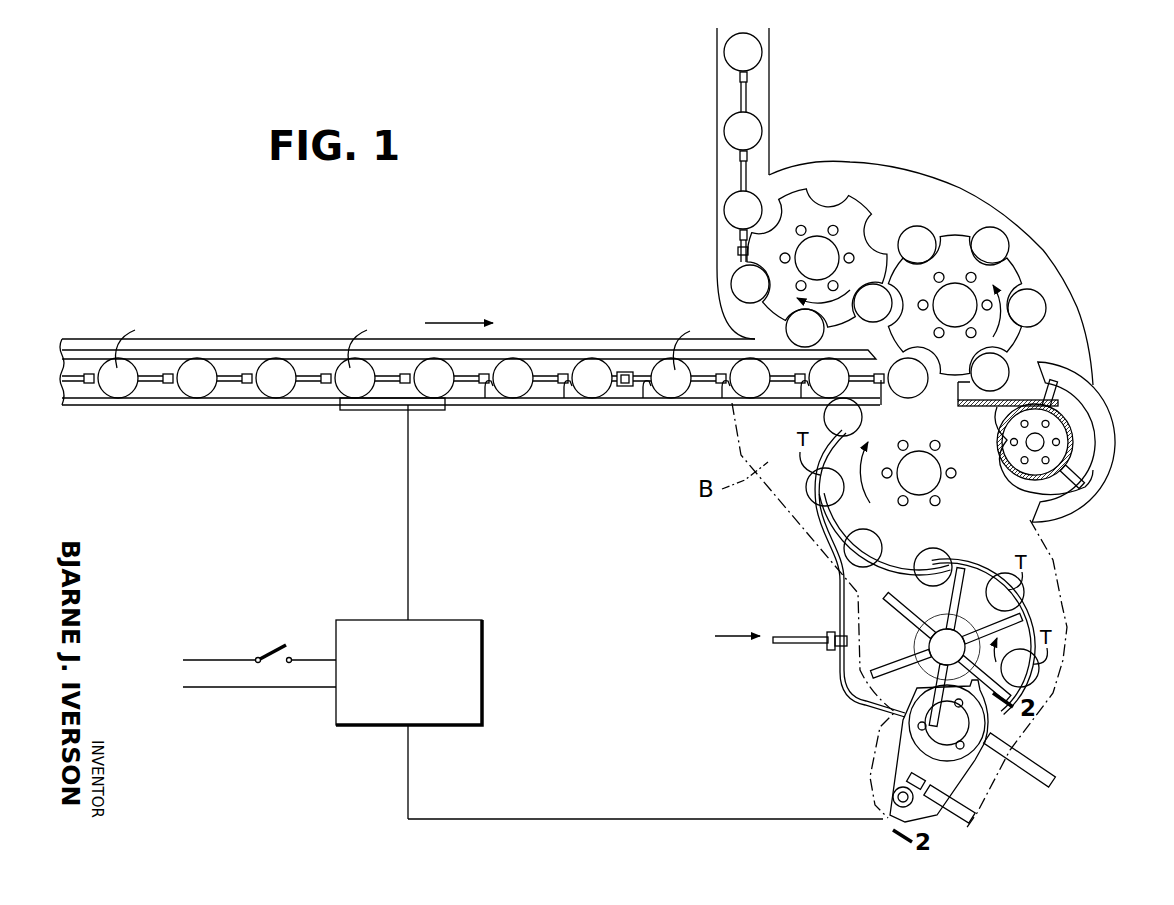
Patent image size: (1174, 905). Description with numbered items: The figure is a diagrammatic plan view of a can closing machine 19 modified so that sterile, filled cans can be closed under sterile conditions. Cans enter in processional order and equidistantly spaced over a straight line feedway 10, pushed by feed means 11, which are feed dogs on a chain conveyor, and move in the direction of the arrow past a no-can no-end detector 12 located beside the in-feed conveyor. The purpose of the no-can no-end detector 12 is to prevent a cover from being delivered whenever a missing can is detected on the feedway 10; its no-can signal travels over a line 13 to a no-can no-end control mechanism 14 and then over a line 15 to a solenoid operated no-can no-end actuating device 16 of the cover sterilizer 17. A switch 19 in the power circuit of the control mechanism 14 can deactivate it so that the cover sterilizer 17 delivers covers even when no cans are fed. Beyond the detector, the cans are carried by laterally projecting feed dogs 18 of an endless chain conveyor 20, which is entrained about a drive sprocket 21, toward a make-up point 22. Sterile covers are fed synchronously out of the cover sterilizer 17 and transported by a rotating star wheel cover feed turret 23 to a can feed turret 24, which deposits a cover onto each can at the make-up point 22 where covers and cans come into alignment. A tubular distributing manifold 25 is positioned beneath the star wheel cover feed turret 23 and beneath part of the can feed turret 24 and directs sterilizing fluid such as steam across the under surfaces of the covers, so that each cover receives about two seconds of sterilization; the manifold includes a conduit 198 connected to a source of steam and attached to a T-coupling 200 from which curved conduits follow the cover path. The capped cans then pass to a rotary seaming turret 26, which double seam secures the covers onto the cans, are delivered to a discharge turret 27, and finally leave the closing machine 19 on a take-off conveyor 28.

The straight line feedway 10 is at (228, 388).
The feed means 11 is at (172, 375).
The no-can no-end detector 12 is at (360, 408).
The line 13 is at (409, 540).
The no-can no-end control mechanism 14 is at (462, 690).
The line 15 is at (515, 820).
The solenoid operated no-can no-end actuating device 16 is at (975, 808).
The cover sterilizer 17 is at (980, 734).
The laterally projecting feed dogs 18 is at (566, 400).
The can closing machine / switch 19 is at (277, 648).
The endless chain conveyor 20 is at (1022, 397).
The drive sprocket 21 is at (1057, 430).
The make-up point 22 is at (940, 380).
The star wheel cover feed turret 23 is at (912, 628).
The can feed turret 24 is at (918, 532).
The tubular distributing manifold 25 is at (860, 705).
The rotary seaming turret 26 is at (1008, 281).
The discharge turret 27 is at (855, 220).
The take-off conveyor 28 is at (764, 97).
The conduit 198 is at (793, 635).
The T-coupling 200 is at (832, 650).